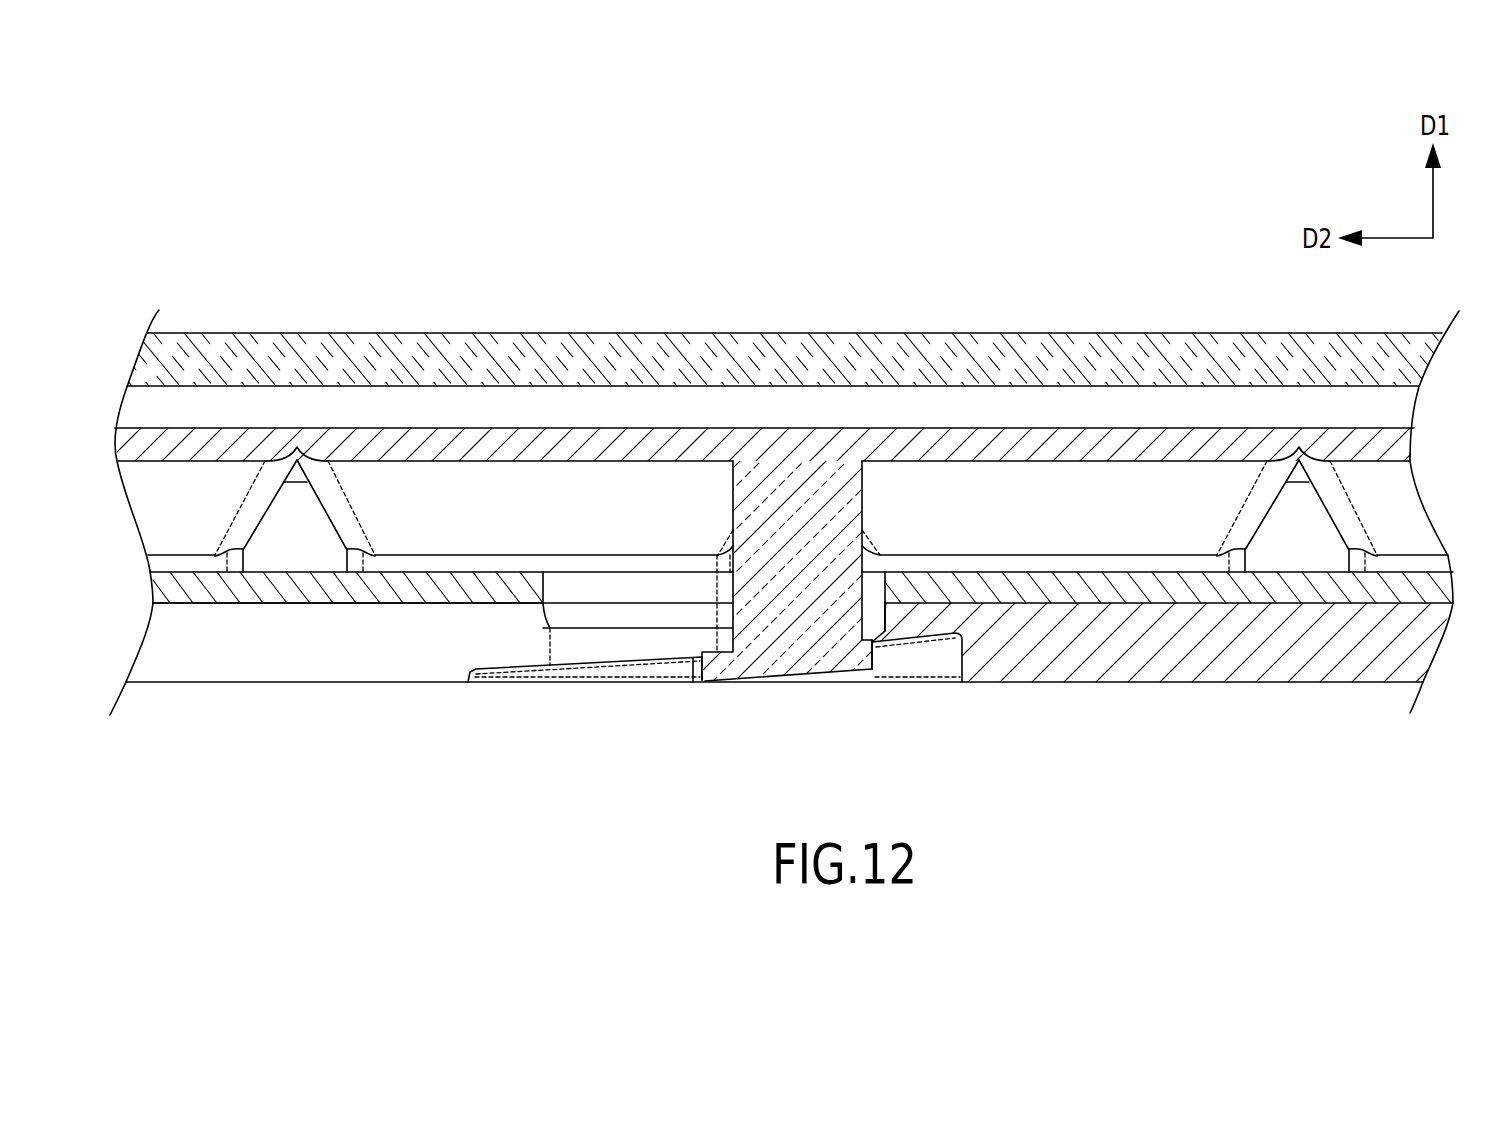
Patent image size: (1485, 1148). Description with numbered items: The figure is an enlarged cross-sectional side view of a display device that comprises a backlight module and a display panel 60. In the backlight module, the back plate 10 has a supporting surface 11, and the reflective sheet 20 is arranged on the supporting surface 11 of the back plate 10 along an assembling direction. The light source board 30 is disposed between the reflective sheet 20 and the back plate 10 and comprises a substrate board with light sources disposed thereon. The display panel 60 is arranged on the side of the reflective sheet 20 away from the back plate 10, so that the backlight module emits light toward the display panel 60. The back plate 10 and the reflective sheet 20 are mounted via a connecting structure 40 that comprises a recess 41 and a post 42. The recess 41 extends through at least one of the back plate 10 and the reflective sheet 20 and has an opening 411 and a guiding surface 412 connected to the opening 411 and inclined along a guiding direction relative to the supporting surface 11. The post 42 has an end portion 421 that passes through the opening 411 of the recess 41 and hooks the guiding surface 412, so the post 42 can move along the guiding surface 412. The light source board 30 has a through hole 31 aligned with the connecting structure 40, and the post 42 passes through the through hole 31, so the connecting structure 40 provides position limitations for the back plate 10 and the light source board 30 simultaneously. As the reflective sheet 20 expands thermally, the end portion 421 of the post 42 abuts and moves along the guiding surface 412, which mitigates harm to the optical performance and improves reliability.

The back plate 10 is at (215, 700).
The supporting surface 11 is at (311, 603).
The reflective sheet 20 is at (1116, 413).
The light source board 30 is at (400, 593).
The through hole 31 is at (543, 590).
The connecting structure 40 is at (796, 518).
The recess 41 is at (941, 707).
The opening 411 is at (882, 630).
The guiding surface 412 is at (633, 662).
The post 42 is at (877, 486).
The end portion 421 is at (818, 660).
The display panel 60 is at (613, 333).